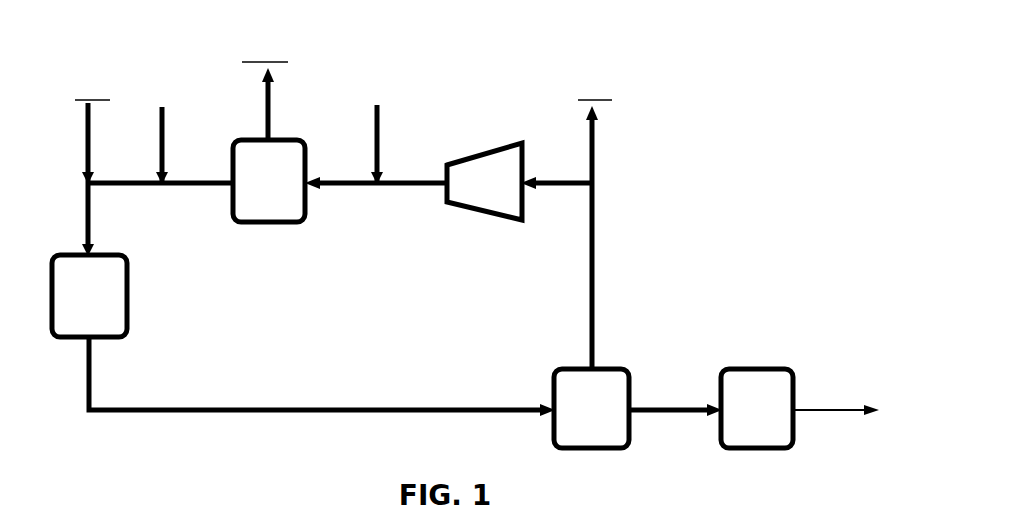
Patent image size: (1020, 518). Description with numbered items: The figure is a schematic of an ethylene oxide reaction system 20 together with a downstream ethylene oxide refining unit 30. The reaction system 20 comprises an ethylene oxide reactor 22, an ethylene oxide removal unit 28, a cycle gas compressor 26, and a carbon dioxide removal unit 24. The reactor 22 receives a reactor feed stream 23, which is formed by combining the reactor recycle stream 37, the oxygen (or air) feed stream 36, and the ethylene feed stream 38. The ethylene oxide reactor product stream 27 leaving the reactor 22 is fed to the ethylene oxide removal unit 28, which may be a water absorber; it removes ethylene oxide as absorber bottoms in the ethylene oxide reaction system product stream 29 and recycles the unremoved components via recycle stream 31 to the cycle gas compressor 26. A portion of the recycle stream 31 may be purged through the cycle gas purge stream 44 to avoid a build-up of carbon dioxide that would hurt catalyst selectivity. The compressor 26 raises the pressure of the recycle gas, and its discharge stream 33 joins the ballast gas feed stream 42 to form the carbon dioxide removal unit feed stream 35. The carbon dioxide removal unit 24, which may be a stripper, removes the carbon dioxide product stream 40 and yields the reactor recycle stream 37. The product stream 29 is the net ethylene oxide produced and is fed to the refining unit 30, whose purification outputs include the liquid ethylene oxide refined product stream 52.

The ethylene oxide reaction system 20 is at (672, 65).
The ethylene oxide reactor 22 is at (103, 298).
The reactor feed stream 23 is at (80, 227).
The carbon dioxide removal unit 24 is at (280, 198).
The cycle gas compressor 26 is at (495, 175).
The ethylene oxide reactor product stream 27 is at (315, 402).
The ethylene oxide removal unit 28 is at (575, 385).
The ethylene oxide reaction system product stream 29 is at (674, 398).
The ethylene oxide refining unit 30 is at (753, 393).
The recycle stream 31 is at (600, 290).
The cycle gas compressor discharge stream 33 is at (430, 177).
The carbon dioxide removal unit feed stream 35 is at (345, 177).
The oxygen feed stream 36 is at (91, 123).
The reactor recycle stream 37 is at (202, 158).
The ethylene feed stream 38 is at (163, 122).
The carbon dioxide product stream 40 is at (265, 78).
The ballast gas feed stream 42 is at (373, 118).
The cycle gas purge stream 44 is at (591, 90).
The liquid ethylene oxide refined product stream 52 is at (858, 402).